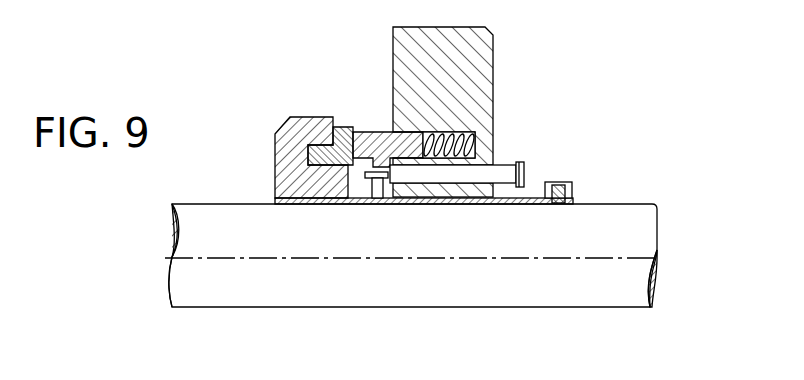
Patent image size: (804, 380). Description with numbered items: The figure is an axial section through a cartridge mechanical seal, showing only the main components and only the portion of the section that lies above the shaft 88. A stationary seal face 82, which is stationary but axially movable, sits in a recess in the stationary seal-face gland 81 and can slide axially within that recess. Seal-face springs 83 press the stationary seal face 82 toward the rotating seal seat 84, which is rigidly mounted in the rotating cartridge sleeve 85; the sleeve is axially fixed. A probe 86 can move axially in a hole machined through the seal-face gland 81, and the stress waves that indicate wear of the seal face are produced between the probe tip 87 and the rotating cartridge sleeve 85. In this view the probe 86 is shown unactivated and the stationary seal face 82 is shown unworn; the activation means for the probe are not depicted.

The stationary seal-face gland 81 is at (485, 52).
The stationary seal face 82 is at (385, 131).
The seal-face springs 83 is at (475, 136).
The rotating seal seat 84 is at (348, 126).
The rotating cartridge sleeve 85 is at (275, 150).
The probe 86 is at (524, 172).
The probe tip 87 is at (370, 179).
The shaft 88 is at (617, 216).